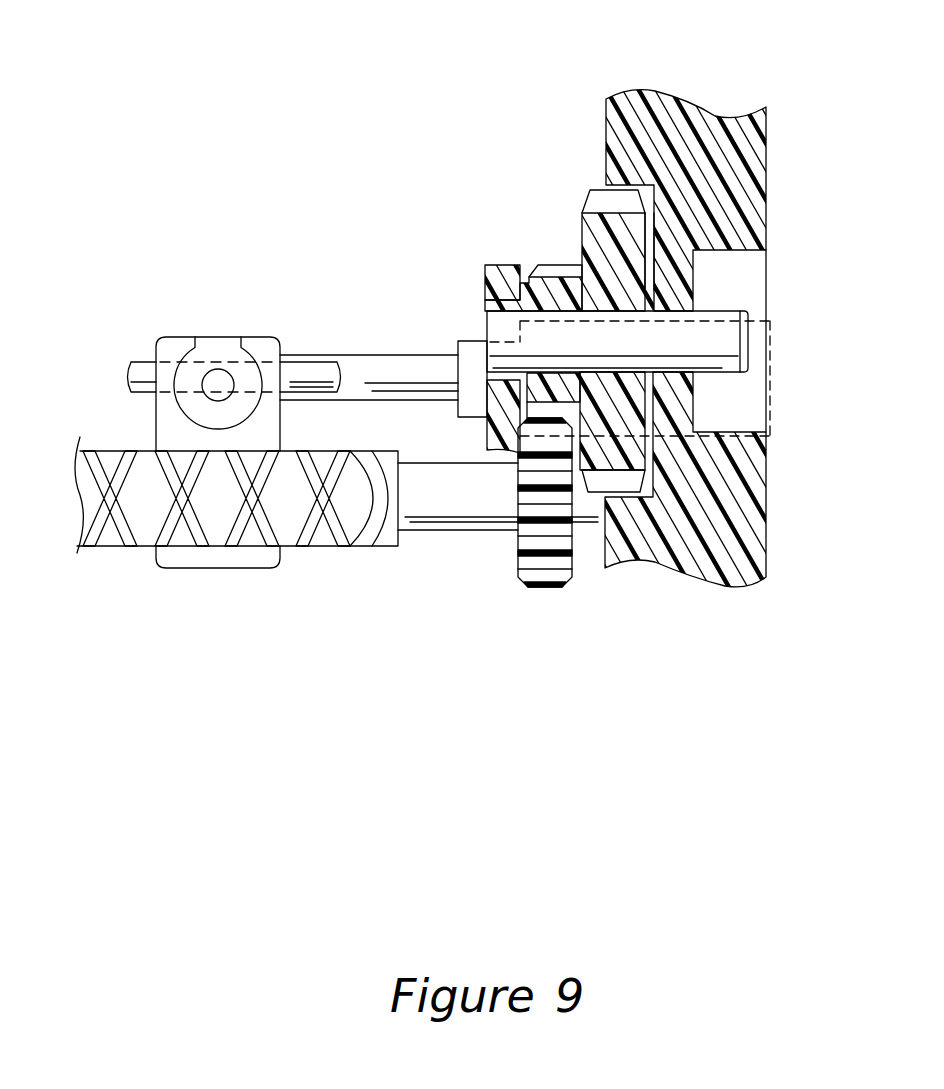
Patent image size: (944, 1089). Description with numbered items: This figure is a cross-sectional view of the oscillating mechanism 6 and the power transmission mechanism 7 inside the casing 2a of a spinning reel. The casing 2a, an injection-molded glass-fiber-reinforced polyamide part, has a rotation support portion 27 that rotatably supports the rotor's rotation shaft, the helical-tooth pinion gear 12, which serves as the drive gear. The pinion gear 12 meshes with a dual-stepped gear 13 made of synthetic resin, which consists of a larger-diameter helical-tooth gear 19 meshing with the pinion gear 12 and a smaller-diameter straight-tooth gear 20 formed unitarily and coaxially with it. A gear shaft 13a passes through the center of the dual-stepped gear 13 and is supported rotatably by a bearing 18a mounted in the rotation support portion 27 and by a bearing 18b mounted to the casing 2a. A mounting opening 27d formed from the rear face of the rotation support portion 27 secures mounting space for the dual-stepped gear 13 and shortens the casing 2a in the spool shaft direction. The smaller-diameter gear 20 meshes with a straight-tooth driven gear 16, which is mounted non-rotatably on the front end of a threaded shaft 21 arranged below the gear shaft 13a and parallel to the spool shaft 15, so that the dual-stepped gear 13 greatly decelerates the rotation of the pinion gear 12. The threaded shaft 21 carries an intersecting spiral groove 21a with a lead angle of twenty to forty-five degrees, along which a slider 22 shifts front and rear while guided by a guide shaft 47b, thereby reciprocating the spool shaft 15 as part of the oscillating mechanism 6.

The larger-diameter helical-tooth gear 19 is at (623, 232).
The dual-stepped gear 13 is at (598, 225).
The smaller-diameter straight-tooth gear 20 is at (550, 273).
The bearing 18b is at (515, 285).
The bearing 18a is at (697, 268).
The casing 2a is at (485, 282).
The pinion gear 12 is at (718, 318).
The gear shaft 13a is at (730, 340).
The mounting opening 27d is at (673, 367).
The slider 22 is at (260, 348).
The guide shaft 47b is at (297, 375).
The spool shaft 15 is at (408, 373).
The threaded shaft 21 is at (355, 507).
The groove 21a is at (237, 535).
The oscillating mechanism 6 is at (298, 584).
The driven gear 16 is at (545, 580).
The power transmission mechanism 7 is at (603, 592).
The rotation support portion 27 is at (711, 558).